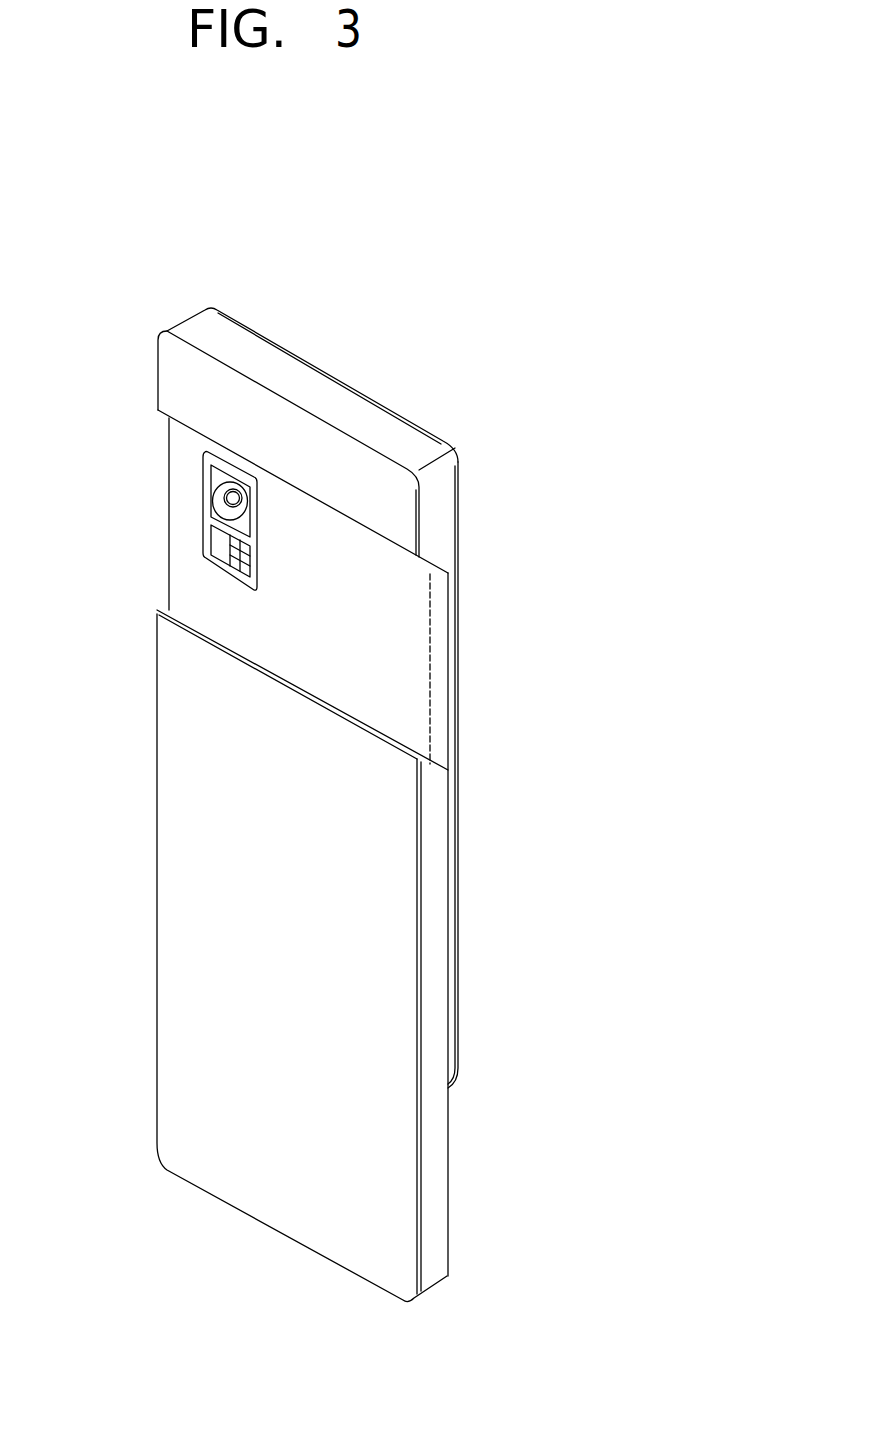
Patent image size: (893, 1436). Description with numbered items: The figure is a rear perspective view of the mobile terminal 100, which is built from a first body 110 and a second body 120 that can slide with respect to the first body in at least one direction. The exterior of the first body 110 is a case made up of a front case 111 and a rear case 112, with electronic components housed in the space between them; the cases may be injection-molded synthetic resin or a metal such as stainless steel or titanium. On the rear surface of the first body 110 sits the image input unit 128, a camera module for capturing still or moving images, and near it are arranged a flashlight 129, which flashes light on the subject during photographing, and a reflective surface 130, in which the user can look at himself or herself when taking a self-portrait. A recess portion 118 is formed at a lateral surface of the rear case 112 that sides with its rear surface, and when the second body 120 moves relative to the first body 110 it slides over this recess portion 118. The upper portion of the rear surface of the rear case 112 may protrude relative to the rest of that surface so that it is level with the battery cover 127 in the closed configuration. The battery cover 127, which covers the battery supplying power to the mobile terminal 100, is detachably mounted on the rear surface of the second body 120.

The mobile terminal 100 is at (472, 292).
The first body 110 is at (266, 674).
The front case 111 is at (198, 320).
The rear case 112 is at (167, 355).
The recess portion 118 is at (440, 668).
The second body 120 is at (258, 956).
The battery cover 127 is at (175, 778).
The image input unit 128 is at (230, 497).
The flashlight 129 is at (236, 559).
The reflective surface 130 is at (217, 537).